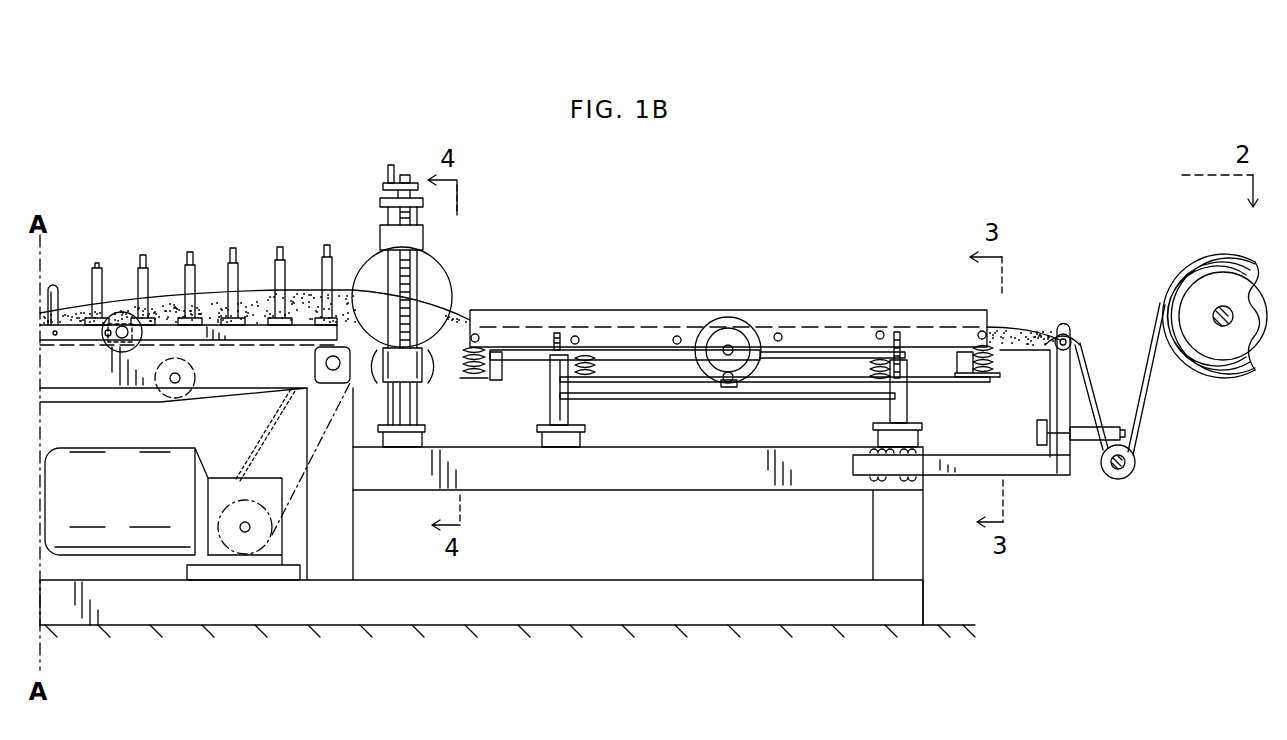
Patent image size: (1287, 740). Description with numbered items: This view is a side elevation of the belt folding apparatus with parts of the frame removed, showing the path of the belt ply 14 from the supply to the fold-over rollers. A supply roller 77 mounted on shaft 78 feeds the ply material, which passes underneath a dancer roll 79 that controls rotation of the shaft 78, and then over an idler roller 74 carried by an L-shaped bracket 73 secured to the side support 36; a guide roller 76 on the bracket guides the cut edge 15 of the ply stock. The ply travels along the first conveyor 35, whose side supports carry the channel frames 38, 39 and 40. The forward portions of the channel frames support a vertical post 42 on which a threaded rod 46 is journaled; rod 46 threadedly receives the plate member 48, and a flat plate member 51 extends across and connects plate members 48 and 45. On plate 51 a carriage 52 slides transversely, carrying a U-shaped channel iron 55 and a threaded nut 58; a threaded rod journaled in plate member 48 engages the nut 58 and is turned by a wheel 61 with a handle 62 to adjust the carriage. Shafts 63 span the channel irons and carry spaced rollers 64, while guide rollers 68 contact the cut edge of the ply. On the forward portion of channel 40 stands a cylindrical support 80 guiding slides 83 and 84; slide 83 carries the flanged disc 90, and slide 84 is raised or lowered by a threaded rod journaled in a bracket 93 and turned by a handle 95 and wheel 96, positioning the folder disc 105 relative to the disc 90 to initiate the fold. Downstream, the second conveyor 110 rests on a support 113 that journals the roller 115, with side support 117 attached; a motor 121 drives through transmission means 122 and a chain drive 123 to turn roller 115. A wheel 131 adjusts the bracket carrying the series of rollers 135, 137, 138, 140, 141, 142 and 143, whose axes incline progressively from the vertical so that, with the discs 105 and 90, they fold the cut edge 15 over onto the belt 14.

The belt ply 14 is at (302, 279).
The cut edge 15 is at (167, 307).
The first conveyor 35 is at (751, 265).
The side support 36 is at (665, 482).
The channel frame 38 is at (922, 430).
The channel frame 39 is at (583, 440).
The channel frame 40 is at (423, 432).
The post 42 is at (553, 413).
The plate member 45 is at (662, 398).
The threaded rod 46 is at (557, 335).
The plate member 48 is at (605, 355).
The flat plate member 51 is at (805, 380).
The carriage 52 is at (630, 447).
The U-shaped channel iron 55 is at (827, 312).
The threaded nut 58 is at (730, 385).
The wheel 61 is at (712, 328).
The handle 62 is at (735, 373).
The shaft 63 is at (778, 334).
The roller 64 is at (993, 362).
The guide roller 68 is at (502, 368).
The L-shaped bracket 73 is at (1022, 467).
The idler roller 74 is at (1075, 340).
The guide roller 76 is at (1085, 440).
The supply roller 77 is at (1213, 355).
The shaft 78 is at (1223, 316).
The dancer roll 79 is at (1128, 470).
The cylindrical support 80 is at (407, 417).
The slide 83 is at (422, 365).
The slide 84 is at (423, 238).
The flanged disc 90 is at (365, 387).
The bracket 93 is at (380, 204).
The handle 95 is at (388, 174).
The wheel 96 is at (403, 178).
The folder disc 105 is at (437, 280).
The second conveyor 110 is at (151, 203).
The support 113 is at (345, 553).
The roller 115 is at (315, 363).
The side support 117 is at (68, 378).
The motor 121 is at (100, 513).
The transmission means 122 is at (222, 552).
The chain drive 123 is at (258, 440).
The wheel 131 is at (125, 352).
The roller 135 is at (320, 277).
The roller 137 is at (277, 283).
The roller 138 is at (227, 277).
The roller 140 is at (185, 273).
The roller 141 is at (140, 280).
The roller 142 is at (90, 283).
The roller 143 is at (53, 283).